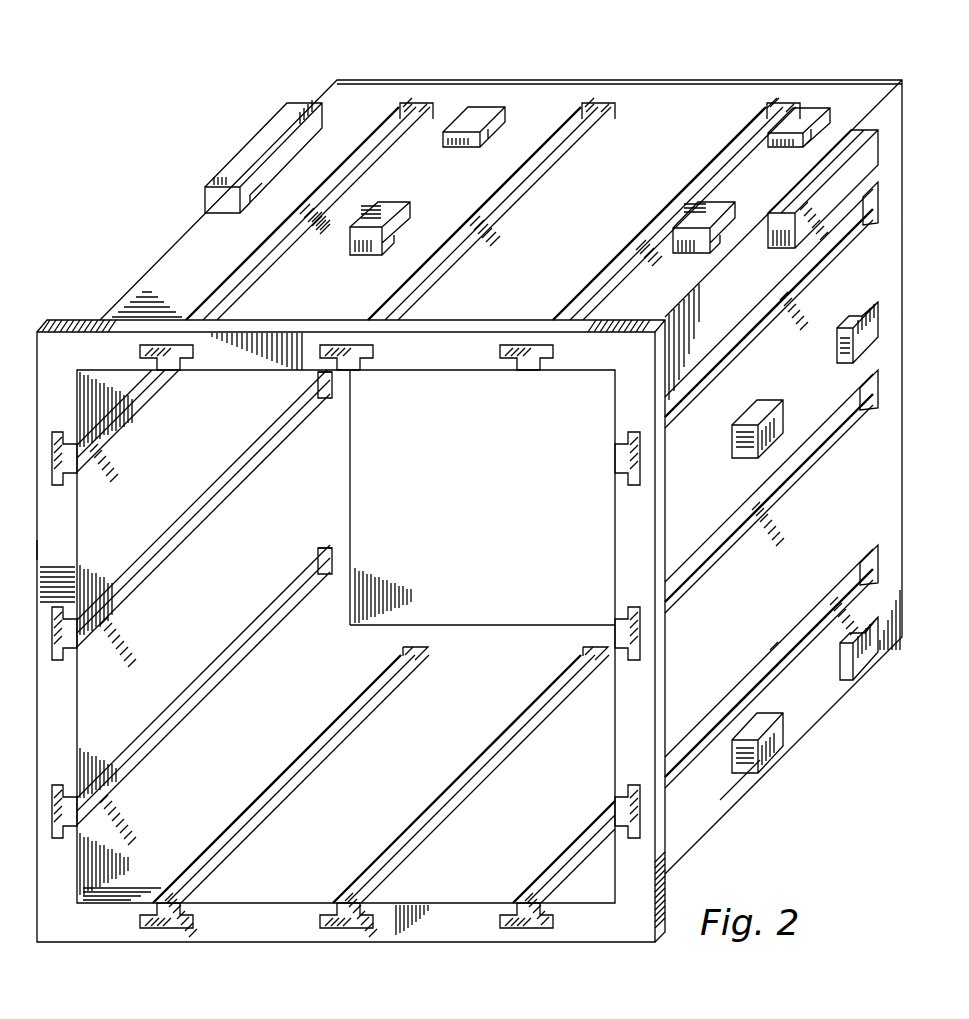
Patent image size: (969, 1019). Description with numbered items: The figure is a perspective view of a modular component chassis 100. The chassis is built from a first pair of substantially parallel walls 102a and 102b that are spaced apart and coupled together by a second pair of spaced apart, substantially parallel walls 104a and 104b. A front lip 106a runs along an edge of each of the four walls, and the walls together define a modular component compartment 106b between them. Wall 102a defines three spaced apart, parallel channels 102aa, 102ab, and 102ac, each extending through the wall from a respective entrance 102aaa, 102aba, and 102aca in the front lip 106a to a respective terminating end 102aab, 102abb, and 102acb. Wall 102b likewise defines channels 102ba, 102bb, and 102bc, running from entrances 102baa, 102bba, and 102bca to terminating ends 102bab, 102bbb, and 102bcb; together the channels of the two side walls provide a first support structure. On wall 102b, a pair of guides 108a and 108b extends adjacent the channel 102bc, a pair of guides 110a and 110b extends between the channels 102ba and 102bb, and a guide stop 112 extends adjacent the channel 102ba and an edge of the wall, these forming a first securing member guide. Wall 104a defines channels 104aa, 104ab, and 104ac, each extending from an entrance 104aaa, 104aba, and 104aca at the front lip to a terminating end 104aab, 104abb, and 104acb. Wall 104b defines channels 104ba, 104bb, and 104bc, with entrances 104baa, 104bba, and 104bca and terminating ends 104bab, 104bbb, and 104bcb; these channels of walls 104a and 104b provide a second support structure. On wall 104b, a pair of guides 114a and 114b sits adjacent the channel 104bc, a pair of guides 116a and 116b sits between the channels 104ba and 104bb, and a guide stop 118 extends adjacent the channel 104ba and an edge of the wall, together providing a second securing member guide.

The modular component chassis 100 is at (131, 166).
The wall 102a is at (345, 497).
The channel 102aa is at (100, 450).
The entrance 102aaa is at (52, 478).
The terminating end 102aab is at (323, 210).
The channel 102ab is at (228, 488).
The entrance 102aba is at (65, 660).
The terminating end 102abb is at (340, 415).
The channel 102ac is at (262, 618).
The entrance 102aca is at (52, 790).
The terminating end 102acb is at (340, 558).
The wall 102b is at (735, 790).
The channel 102ba is at (816, 312).
The entrance 102baa is at (625, 460).
The terminating end 102bab is at (873, 208).
The channel 102bb is at (700, 590).
The entrance 102bba is at (625, 640).
The terminating end 102bbb is at (873, 410).
The channel 102bc is at (690, 780).
The entrance 102bca is at (628, 812).
The terminating end 102bcb is at (875, 568).
The wall 104a is at (480, 890).
The channel 104aa is at (262, 822).
The entrance 104aaa is at (165, 928).
The terminating end 104aab is at (417, 655).
The channel 104ab is at (460, 766).
The entrance 104aba is at (347, 928).
The terminating end 104abb is at (600, 658).
The channel 104ac is at (572, 828).
The entrance 104aca is at (528, 928).
The terminating end 104acb is at (780, 650).
The wall 104b is at (168, 270).
The channel 104ba is at (385, 118).
The entrance 104baa is at (172, 362).
The terminating end 104bab is at (412, 112).
The channel 104bb is at (565, 117).
The entrance 104bba is at (370, 350).
The terminating end 104bbb is at (597, 112).
The channel 104bc is at (737, 118).
The entrance 104bca is at (525, 360).
The terminating end 104bcb is at (773, 105).
The front lip 106a is at (63, 547).
The modular component compartment 106b is at (533, 523).
The guide 108a is at (782, 738).
The guide 108b is at (860, 665).
The guide 110a is at (738, 452).
The guide 110b is at (858, 305).
The guide stop 112 is at (775, 232).
The guide 114a is at (692, 246).
The guide 114b is at (808, 115).
The guide 116a is at (396, 226).
The guide 116b is at (480, 113).
The guide stop 118 is at (264, 136).